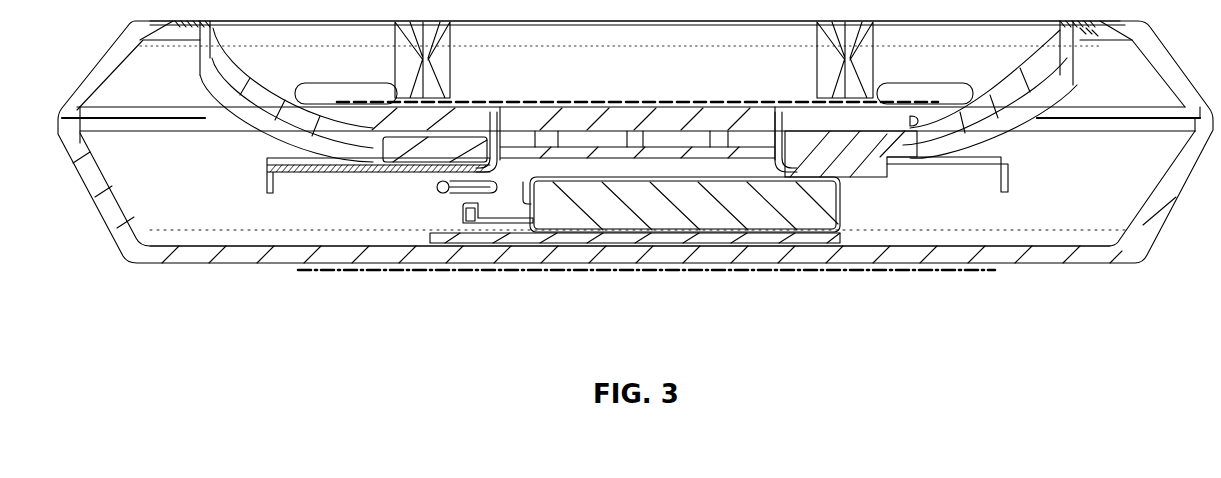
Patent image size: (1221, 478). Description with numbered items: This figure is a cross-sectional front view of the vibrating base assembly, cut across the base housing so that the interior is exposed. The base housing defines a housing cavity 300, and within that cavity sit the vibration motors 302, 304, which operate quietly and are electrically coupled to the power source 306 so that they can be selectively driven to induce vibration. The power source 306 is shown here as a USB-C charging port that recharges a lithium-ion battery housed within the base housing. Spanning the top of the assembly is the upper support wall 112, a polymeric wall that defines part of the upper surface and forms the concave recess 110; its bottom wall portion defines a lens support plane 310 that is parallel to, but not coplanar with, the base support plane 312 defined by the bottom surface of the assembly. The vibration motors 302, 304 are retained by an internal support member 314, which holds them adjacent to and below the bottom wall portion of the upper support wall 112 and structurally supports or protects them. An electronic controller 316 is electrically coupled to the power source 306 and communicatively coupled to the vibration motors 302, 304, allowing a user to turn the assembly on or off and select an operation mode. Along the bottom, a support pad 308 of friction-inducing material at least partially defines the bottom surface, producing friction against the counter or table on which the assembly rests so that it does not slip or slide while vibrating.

The concave recess 110 is at (653, 83).
The upper support wall 112 is at (220, 50).
The housing cavity 300 is at (224, 198).
The vibration motor 302 is at (440, 148).
The vibration motor 304 is at (858, 155).
The power source 306 is at (503, 205).
The support pad 308 is at (322, 270).
The lens support plane 310 is at (717, 101).
The base support plane 312 is at (809, 270).
The internal support member 314 is at (370, 170).
The electronic controller 316 is at (590, 233).